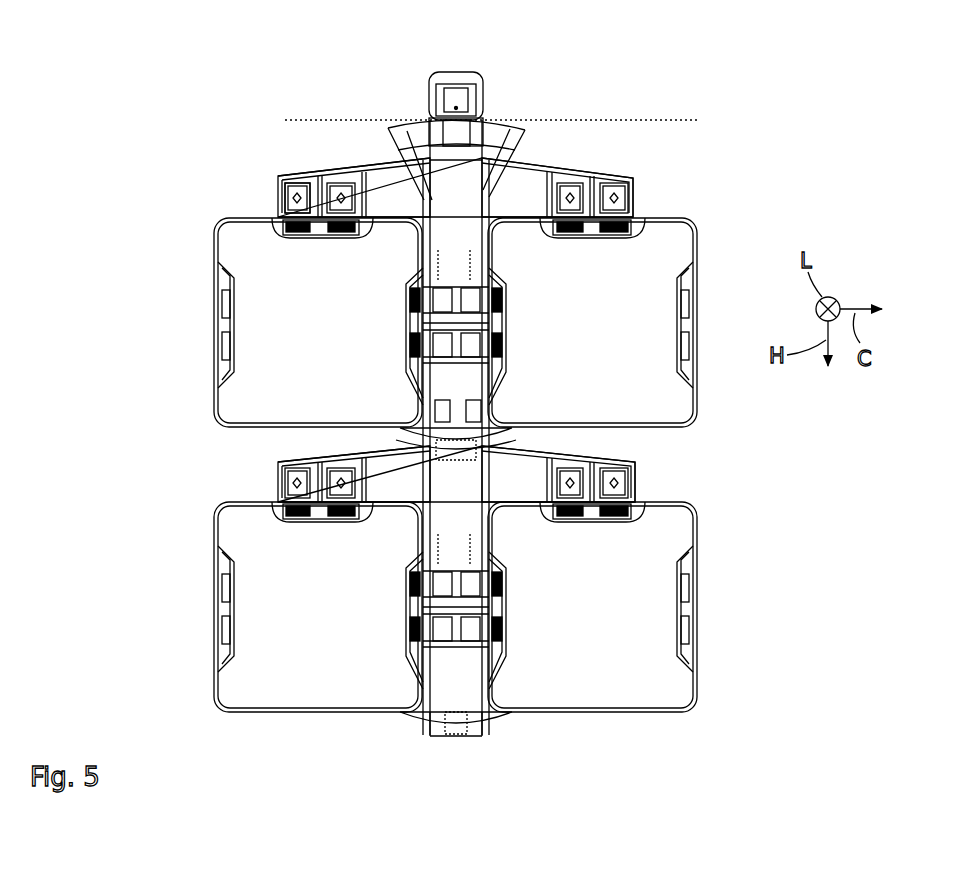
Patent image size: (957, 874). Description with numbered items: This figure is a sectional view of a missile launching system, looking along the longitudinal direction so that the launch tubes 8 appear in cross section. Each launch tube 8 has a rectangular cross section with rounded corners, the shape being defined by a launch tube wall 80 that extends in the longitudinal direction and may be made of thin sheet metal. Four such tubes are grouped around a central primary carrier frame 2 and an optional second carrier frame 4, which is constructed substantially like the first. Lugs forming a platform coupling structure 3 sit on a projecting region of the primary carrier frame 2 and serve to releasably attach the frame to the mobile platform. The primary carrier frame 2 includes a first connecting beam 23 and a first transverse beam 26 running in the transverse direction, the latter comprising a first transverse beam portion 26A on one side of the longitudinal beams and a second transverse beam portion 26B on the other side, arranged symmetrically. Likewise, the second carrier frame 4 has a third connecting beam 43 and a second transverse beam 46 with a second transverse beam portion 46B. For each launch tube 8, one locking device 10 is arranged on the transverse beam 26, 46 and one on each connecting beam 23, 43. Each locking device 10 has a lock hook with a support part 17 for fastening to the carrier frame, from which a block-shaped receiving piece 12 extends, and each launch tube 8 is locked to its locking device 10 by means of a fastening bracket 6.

The primary carrier frame 2 is at (530, 147).
The platform coupling structure 3 is at (458, 68).
The second carrier frame 4 is at (481, 730).
The fastening bracket 6 is at (278, 228).
The launch tube 8 is at (227, 216).
The locking device 10 is at (308, 172).
The receiving piece 12 is at (337, 228).
The support part 17 is at (288, 198).
The first connecting beam 23 is at (444, 240).
The first transverse beam 26 is at (388, 185).
The first transverse beam portion 26A is at (328, 167).
The second transverse beam portion 26B is at (560, 165).
The third connecting beam 43 is at (466, 707).
The second transverse beam 46 is at (540, 450).
The second transverse beam portion 46B is at (363, 455).
The launch tube wall 80 is at (698, 232).